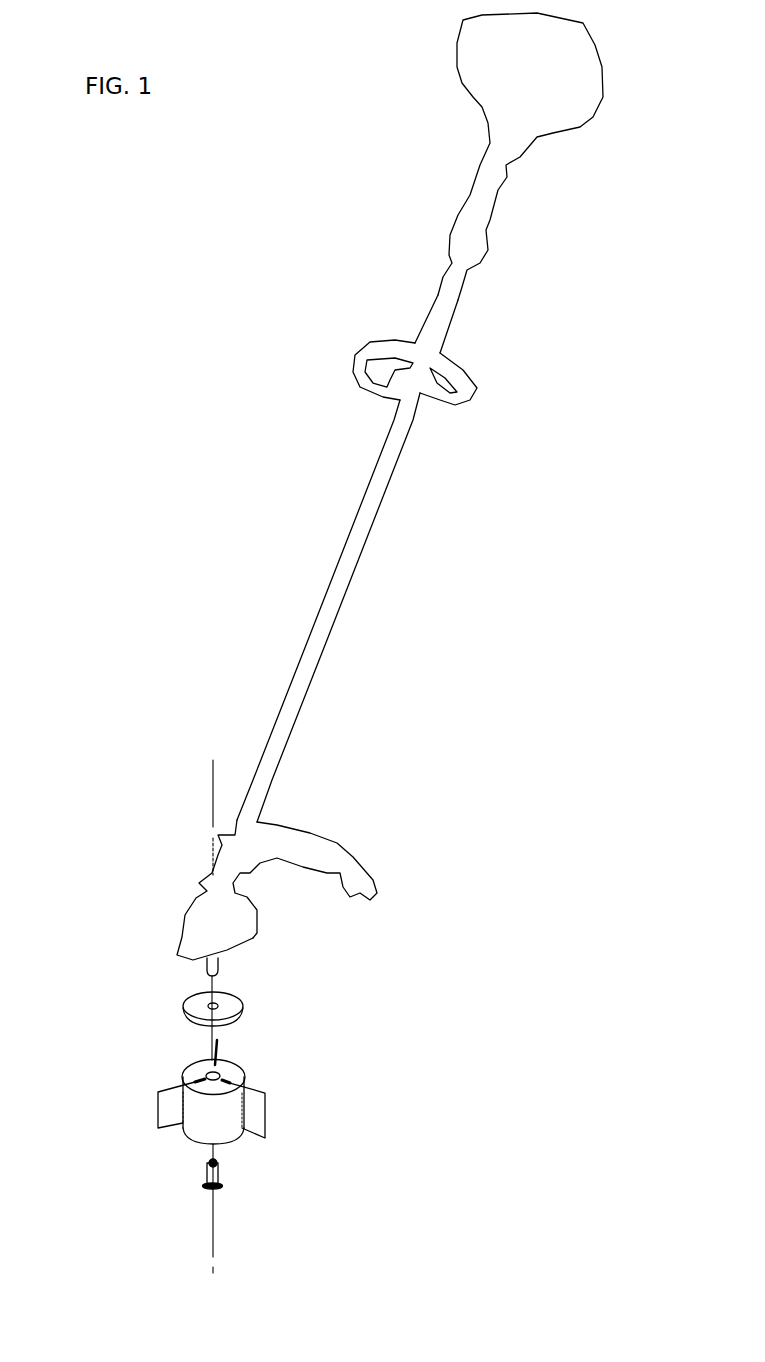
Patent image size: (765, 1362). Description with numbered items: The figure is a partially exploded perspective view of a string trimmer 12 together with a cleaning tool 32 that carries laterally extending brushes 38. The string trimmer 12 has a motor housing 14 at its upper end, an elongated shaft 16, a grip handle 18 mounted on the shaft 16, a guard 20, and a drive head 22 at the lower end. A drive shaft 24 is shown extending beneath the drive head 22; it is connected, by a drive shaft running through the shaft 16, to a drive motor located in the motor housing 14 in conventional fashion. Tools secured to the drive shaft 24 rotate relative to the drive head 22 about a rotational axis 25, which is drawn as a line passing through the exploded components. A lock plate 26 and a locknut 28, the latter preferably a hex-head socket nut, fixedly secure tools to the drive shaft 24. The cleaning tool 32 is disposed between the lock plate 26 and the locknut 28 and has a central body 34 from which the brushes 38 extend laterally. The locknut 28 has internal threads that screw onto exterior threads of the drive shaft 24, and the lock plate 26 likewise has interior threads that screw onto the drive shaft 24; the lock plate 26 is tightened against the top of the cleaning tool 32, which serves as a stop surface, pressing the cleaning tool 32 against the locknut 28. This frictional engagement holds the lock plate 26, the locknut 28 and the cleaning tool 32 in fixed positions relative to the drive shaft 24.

The string trimmer 12 is at (250, 474).
The motor housing 14 is at (577, 100).
The shaft 16 is at (327, 612).
The grip handle 18 is at (458, 377).
The guard 20 is at (332, 853).
The drive head 22 is at (197, 925).
The drive shaft 24 is at (207, 968).
The rotational axis 25 is at (212, 803).
The lock plate 26 is at (235, 1007).
The locknut 28 is at (218, 1178).
The cleaning tool 32 is at (165, 1058).
The hub 34 is at (202, 1118).
The brushes 38 is at (222, 1047).